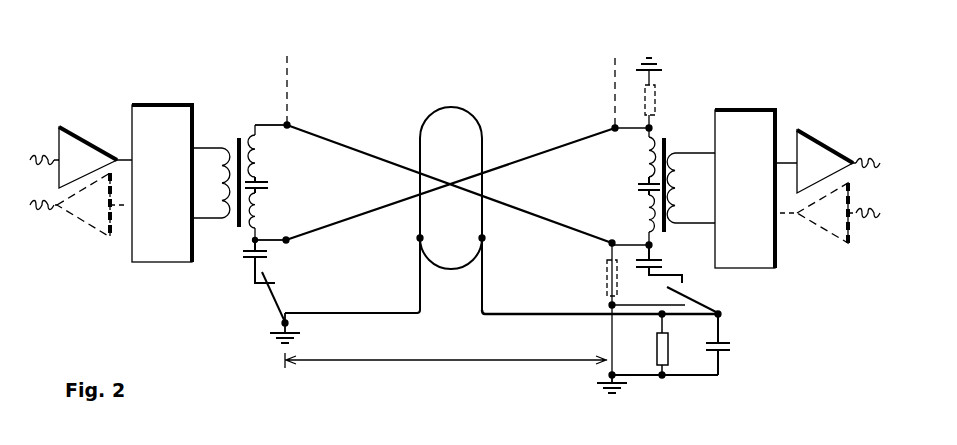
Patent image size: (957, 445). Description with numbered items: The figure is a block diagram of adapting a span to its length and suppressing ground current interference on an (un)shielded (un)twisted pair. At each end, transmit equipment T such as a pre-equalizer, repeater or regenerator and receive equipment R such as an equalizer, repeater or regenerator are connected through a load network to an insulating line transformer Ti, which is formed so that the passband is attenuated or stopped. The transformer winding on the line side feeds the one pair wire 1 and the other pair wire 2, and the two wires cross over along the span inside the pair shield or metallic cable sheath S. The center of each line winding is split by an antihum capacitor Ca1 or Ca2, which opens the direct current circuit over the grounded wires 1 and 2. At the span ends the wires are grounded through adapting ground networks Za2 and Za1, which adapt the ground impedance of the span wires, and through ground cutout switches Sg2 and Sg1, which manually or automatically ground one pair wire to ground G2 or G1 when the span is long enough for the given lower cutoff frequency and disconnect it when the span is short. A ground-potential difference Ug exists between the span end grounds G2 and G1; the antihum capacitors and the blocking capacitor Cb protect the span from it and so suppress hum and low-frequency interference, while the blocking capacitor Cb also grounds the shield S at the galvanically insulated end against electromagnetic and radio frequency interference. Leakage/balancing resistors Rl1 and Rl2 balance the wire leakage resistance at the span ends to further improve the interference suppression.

The (un)shielded (un)twisted pair is at (607, 52).
The transmit equipment T is at (455, 185).
The receive equipment R is at (455, 183).
The insulating line transformer Ti is at (453, 179).
The antihum capacitor Ca1 is at (266, 182).
The antihum capacitor Ca2 is at (636, 186).
The pair wire 1 is at (272, 117).
The pair wire 2 is at (271, 231).
The adapting ground network Za2 is at (237, 261).
The adapting ground network Za1 is at (668, 264).
The ground cutout switch Sg2 is at (256, 297).
The ground cutout switch Sg1 is at (711, 303).
The ground G2 is at (292, 328).
The ground G1 is at (640, 226).
The pair shield S is at (501, 210).
The leakage/balancing resistor Rl1 is at (623, 283).
The leakage/balancing resistor Rl2 is at (668, 99).
The blocking capacitor Cb is at (703, 344).
The ground-potential difference Ug is at (446, 355).